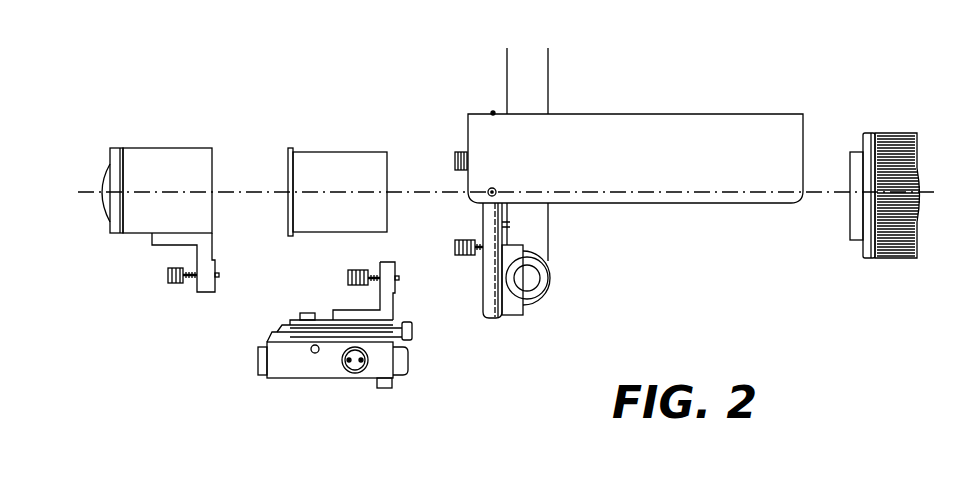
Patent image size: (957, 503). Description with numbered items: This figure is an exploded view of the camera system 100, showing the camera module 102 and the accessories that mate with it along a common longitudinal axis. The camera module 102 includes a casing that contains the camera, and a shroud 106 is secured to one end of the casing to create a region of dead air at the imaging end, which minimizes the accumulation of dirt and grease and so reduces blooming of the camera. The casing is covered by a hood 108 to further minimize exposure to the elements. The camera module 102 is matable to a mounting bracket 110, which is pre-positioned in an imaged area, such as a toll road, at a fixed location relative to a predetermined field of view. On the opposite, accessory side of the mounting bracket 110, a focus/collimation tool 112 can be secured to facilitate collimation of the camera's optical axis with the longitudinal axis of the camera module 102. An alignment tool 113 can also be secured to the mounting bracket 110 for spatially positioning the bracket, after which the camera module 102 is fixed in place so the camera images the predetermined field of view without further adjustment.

The camera system 100 is at (627, 77).
The camera module 102 is at (889, 258).
The shroud 106 is at (318, 152).
The hood 108 is at (693, 204).
The mounting bracket 110 is at (520, 308).
The focus/collimation tool 112 is at (152, 148).
The alignment tool 113 is at (313, 378).